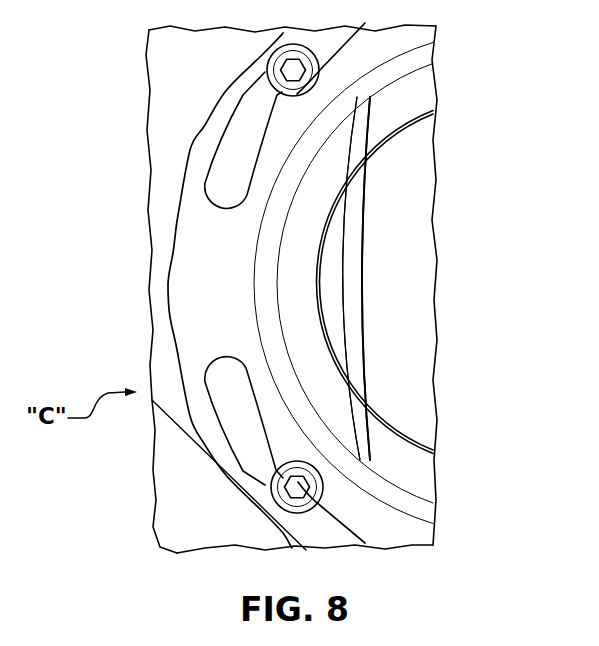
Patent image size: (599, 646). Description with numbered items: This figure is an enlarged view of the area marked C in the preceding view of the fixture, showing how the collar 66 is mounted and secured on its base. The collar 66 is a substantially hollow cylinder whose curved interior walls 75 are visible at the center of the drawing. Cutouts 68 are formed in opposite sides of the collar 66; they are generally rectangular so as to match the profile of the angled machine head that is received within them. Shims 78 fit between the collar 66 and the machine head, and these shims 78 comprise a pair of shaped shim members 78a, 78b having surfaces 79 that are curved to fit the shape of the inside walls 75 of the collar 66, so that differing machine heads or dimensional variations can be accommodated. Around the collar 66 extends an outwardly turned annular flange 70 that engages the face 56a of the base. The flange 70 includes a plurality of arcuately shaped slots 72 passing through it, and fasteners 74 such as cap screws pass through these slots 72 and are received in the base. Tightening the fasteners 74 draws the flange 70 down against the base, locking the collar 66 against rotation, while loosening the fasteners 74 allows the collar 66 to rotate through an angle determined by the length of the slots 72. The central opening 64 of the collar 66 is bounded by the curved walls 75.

The face 56a is at (162, 197).
The central opening 64 is at (428, 228).
The collar 66 is at (293, 252).
The cutouts 68 is at (430, 79).
The annular flange 70 is at (207, 313).
The arcuately shaped slots 72 is at (232, 162).
The fasteners 74 is at (297, 487).
The curved interior walls 75 is at (403, 154).
The shims 78 is at (382, 263).
The shim member 78a is at (333, 313).
The shim member 78b is at (350, 290).
The surfaces 79 is at (324, 204).